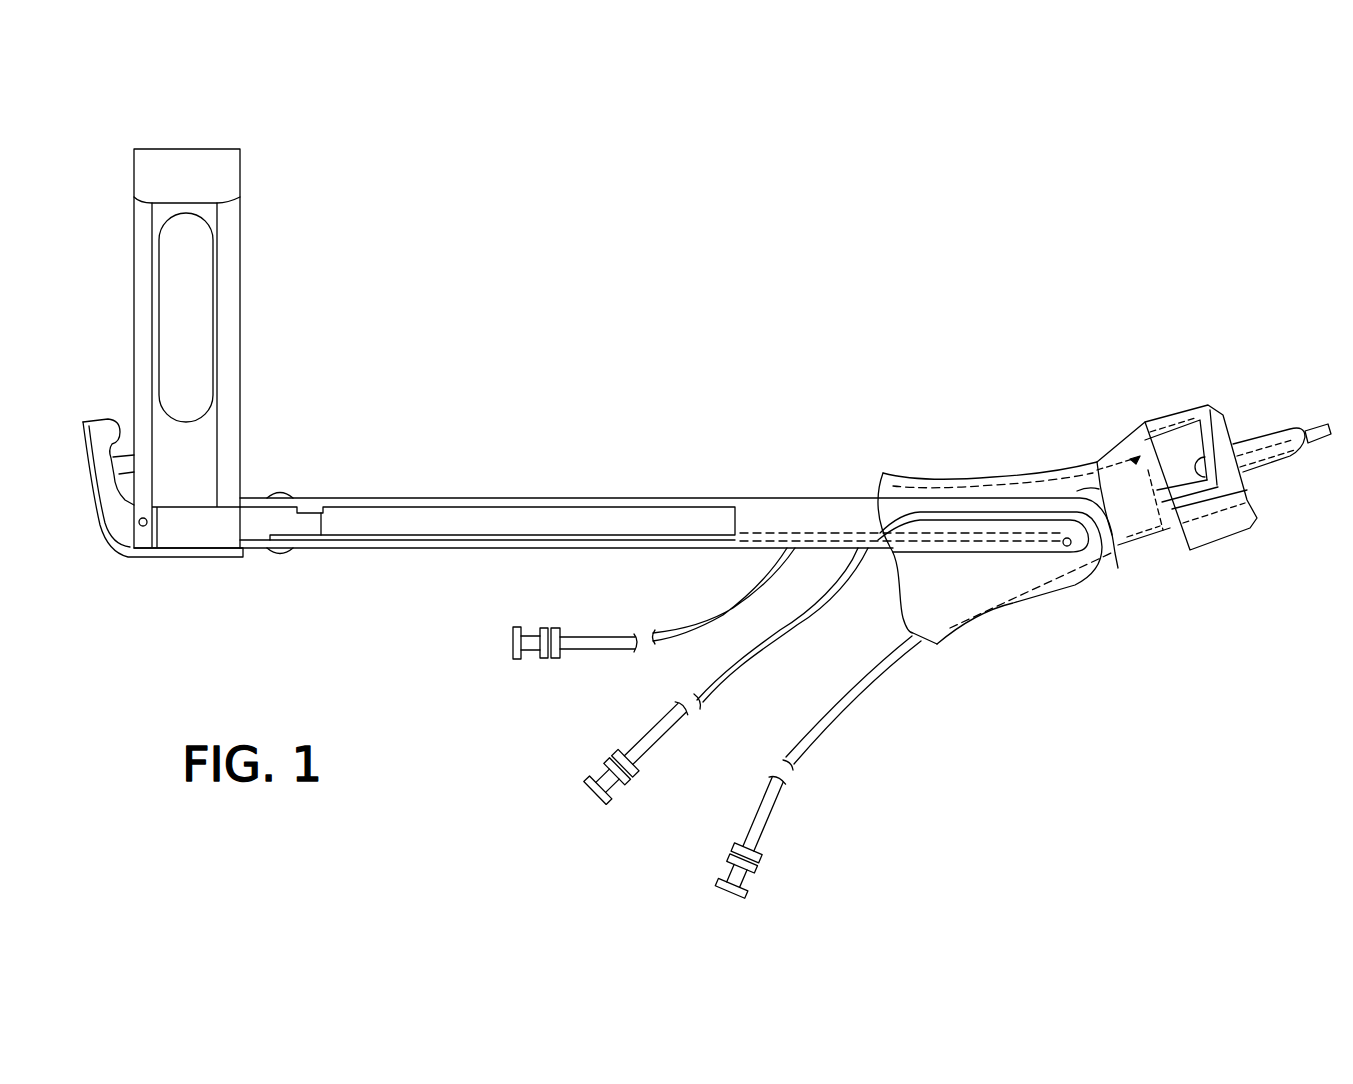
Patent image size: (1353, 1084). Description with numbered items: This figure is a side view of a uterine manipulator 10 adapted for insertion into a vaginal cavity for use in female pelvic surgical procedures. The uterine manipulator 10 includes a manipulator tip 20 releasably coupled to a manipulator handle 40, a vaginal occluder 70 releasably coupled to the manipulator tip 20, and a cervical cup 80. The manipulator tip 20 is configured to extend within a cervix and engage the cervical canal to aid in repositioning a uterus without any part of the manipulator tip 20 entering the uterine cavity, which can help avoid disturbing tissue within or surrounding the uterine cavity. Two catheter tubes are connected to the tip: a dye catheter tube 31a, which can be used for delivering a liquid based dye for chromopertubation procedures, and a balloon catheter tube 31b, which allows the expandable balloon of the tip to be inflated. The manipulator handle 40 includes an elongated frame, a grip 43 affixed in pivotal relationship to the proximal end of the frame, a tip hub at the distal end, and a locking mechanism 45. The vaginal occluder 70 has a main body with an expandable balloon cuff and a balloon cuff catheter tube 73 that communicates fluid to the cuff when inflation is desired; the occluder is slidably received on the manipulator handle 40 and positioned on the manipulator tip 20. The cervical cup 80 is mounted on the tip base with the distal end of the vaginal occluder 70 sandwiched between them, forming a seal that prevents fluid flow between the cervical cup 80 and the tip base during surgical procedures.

The uterine manipulator 10 is at (676, 339).
The manipulator tip 20 is at (1312, 413).
The dye catheter tube 31a is at (652, 748).
The balloon catheter tube 31b is at (597, 647).
The manipulator handle 40 is at (434, 499).
The grip 43 is at (223, 163).
The locking mechanism 45 is at (101, 427).
The vaginal occluder 70 is at (999, 612).
The balloon cuff catheter tube 73 is at (845, 705).
The cervical cup 80 is at (1257, 523).